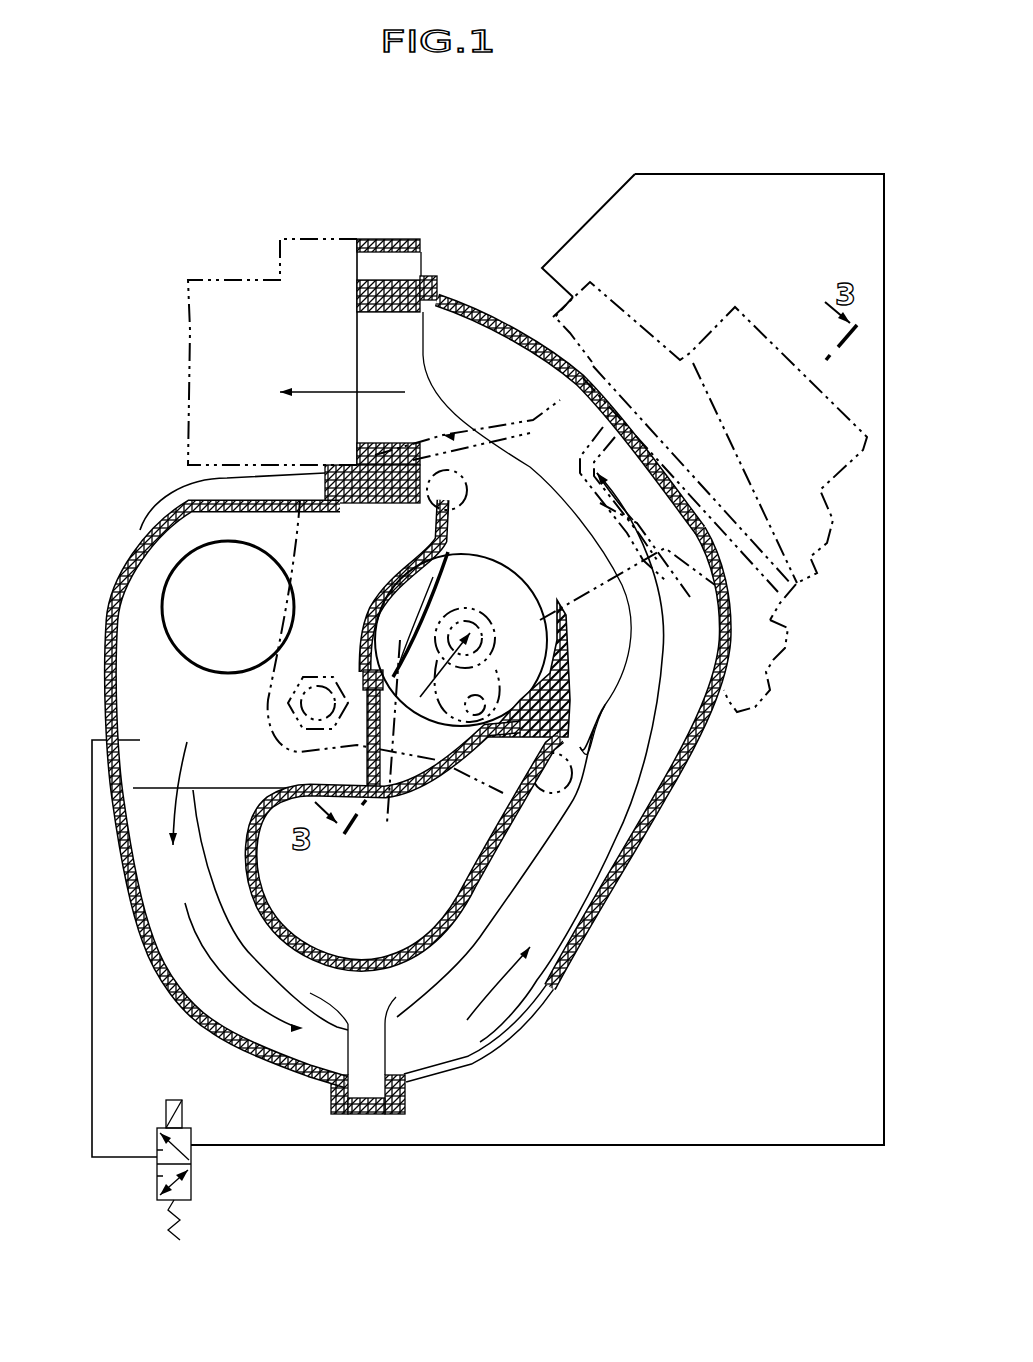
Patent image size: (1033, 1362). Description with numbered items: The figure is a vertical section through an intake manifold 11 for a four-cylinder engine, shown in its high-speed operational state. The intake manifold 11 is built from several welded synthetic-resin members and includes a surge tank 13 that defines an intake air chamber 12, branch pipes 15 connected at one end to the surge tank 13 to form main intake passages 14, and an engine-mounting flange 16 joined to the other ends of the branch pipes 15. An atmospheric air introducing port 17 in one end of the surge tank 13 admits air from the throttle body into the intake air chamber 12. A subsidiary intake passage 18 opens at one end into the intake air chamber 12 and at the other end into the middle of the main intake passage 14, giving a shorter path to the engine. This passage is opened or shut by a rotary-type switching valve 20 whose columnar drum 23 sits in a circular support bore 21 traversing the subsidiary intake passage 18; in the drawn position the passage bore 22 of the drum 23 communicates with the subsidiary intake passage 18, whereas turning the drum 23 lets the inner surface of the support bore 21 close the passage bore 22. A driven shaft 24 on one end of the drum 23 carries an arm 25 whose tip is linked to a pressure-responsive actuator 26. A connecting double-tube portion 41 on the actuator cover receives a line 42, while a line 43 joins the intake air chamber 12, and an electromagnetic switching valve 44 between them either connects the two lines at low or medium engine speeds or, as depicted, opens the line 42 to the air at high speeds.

The intake manifold 11 is at (555, 993).
The intake air chamber 12 is at (262, 777).
The surge tank 13 is at (108, 627).
The main intake passage 14 is at (585, 882).
The branch pipe 15 is at (657, 793).
The engine-mounting flange 16 is at (398, 239).
The atmospheric air introducing port 17 is at (190, 568).
The subsidiary intake passage 18 is at (439, 780).
The rotary-type switching valve 20 is at (520, 567).
The support bore 21 is at (403, 600).
The passage bore 22 is at (537, 600).
The drum 23 is at (360, 683).
The driven shaft 24 is at (500, 592).
The arm 25 is at (388, 752).
The pressure-responsive actuator 26 is at (677, 340).
The connecting double-tube portion 41 is at (503, 325).
The line 42 is at (687, 1145).
The line 43 is at (92, 983).
The electromagnetic switching valve 44 is at (198, 1155).